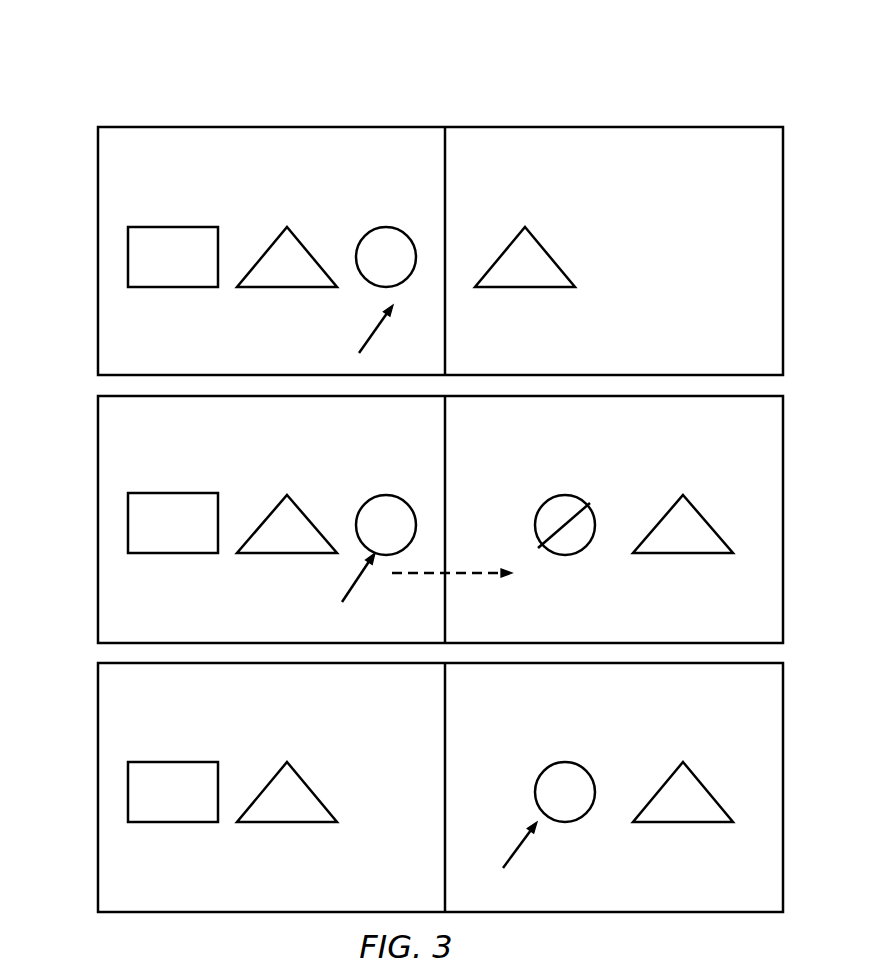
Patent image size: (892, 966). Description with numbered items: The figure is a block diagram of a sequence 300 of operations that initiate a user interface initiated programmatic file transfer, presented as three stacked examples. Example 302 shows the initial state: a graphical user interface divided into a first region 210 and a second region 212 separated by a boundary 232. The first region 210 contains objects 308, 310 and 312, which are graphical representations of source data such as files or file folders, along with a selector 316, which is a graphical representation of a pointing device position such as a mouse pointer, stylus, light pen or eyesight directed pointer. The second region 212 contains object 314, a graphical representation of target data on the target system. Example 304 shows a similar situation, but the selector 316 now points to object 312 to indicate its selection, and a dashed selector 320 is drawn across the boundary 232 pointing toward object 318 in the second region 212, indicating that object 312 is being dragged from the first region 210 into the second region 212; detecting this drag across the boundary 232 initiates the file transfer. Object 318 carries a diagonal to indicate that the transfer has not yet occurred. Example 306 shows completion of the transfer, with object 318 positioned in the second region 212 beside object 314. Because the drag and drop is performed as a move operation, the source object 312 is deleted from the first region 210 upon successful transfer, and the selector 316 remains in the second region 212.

The sequence 300 is at (218, 72).
The example 302 is at (90, 256).
The example 304 is at (90, 524).
The example 306 is at (90, 793).
The first region 210 is at (253, 163).
The second region 212 is at (601, 163).
The boundary 232 is at (447, 185).
The object 308 is at (172, 226).
The object 310 is at (272, 238).
The object 312 is at (383, 227).
The object 314 is at (541, 238).
The selector 316 is at (366, 335).
The object 318 is at (567, 495).
The dashed selector 320 is at (473, 572).